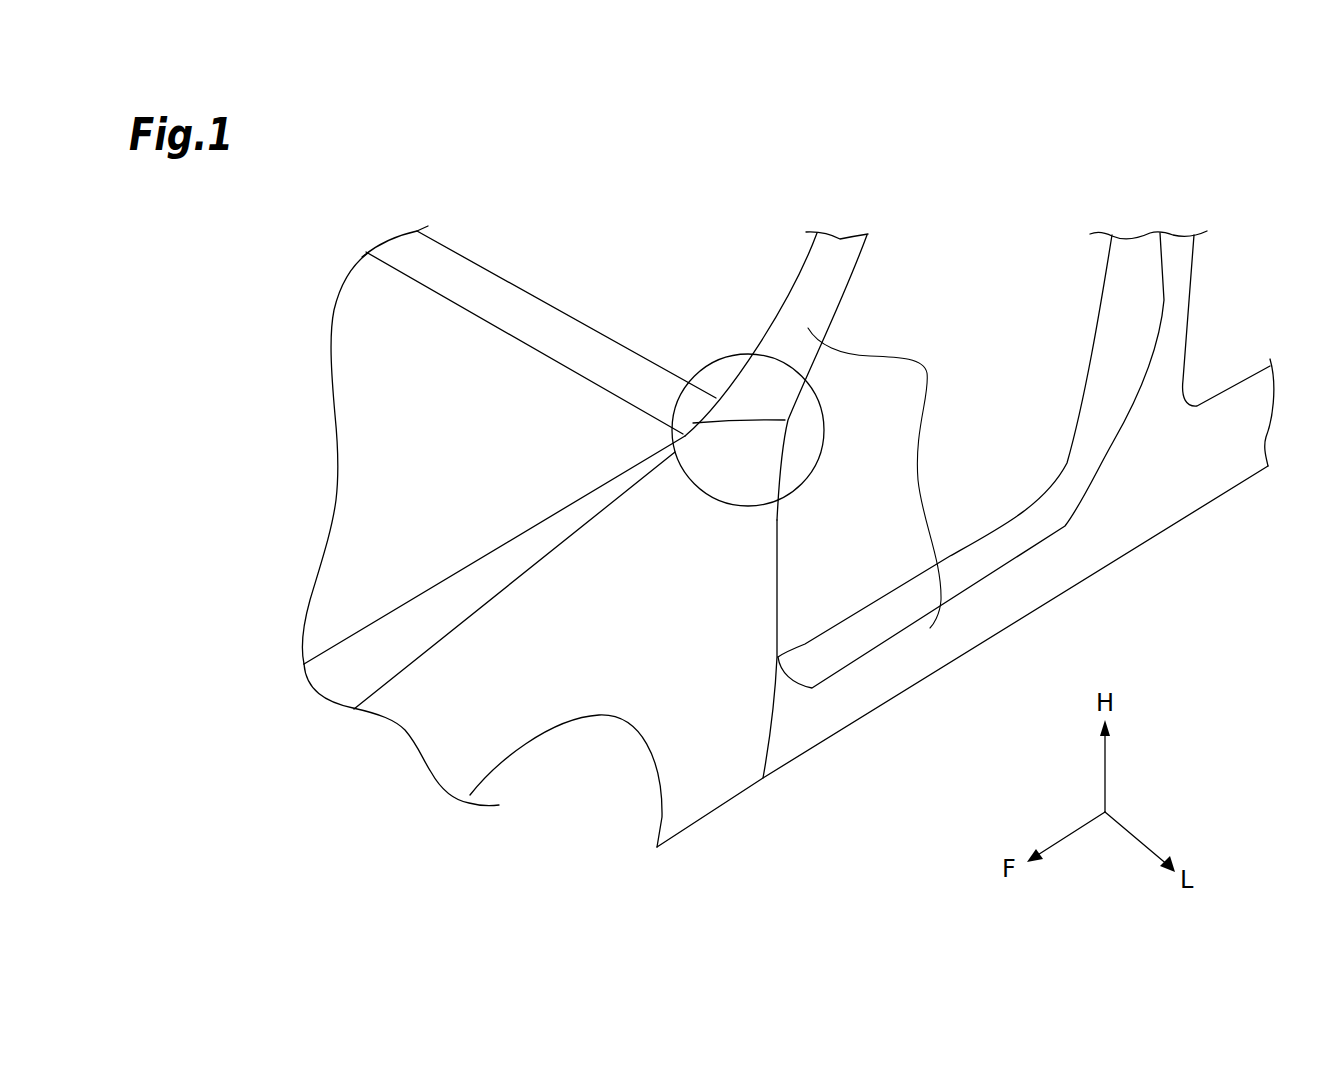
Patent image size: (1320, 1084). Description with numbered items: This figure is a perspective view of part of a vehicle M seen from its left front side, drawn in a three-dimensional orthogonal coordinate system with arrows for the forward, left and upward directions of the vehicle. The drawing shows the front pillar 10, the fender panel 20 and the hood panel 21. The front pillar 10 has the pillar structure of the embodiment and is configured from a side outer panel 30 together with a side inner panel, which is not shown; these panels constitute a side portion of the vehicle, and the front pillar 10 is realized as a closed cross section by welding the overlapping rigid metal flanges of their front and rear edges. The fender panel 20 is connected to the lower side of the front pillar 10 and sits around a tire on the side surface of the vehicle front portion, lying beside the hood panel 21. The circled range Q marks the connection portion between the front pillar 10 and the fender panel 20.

The front pillar 10 is at (841, 315).
The fender panel 20 is at (762, 560).
The hood panel 21 is at (352, 452).
The side outer panel 30 is at (886, 478).
The range Q is at (733, 355).
The vehicle M is at (1110, 172).